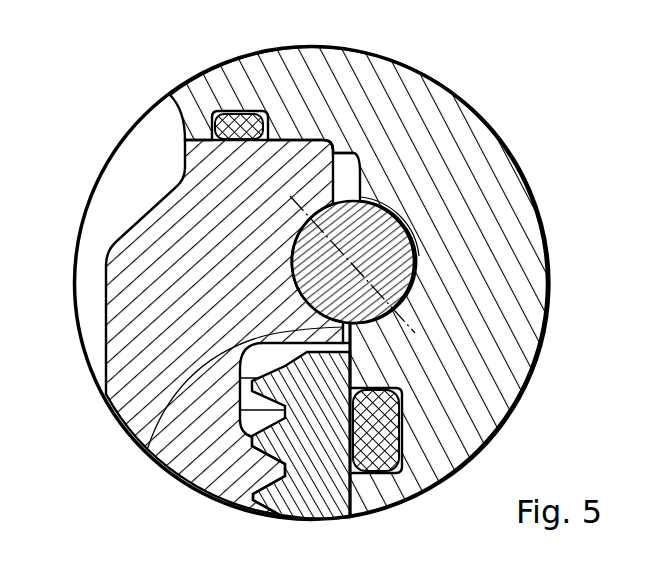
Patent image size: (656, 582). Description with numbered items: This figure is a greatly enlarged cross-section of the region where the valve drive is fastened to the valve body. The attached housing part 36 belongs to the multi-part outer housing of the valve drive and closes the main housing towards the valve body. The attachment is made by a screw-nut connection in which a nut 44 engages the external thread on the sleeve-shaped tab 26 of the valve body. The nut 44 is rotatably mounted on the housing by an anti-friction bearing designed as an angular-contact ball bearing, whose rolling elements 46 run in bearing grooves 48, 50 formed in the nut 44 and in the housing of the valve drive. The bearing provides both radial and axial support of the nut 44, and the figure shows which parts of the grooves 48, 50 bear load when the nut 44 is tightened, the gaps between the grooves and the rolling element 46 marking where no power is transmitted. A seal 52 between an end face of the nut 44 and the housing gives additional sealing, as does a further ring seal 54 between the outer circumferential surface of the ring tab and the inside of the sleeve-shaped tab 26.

The sleeve-shaped tab 26 is at (316, 500).
The attached housing part 36 is at (512, 188).
The nut 44 is at (146, 229).
The rolling elements 46 is at (397, 254).
The bearing groove 48 is at (366, 197).
The bearing groove 50 is at (147, 450).
The seal 52 is at (227, 118).
The ring seal 54 is at (390, 413).